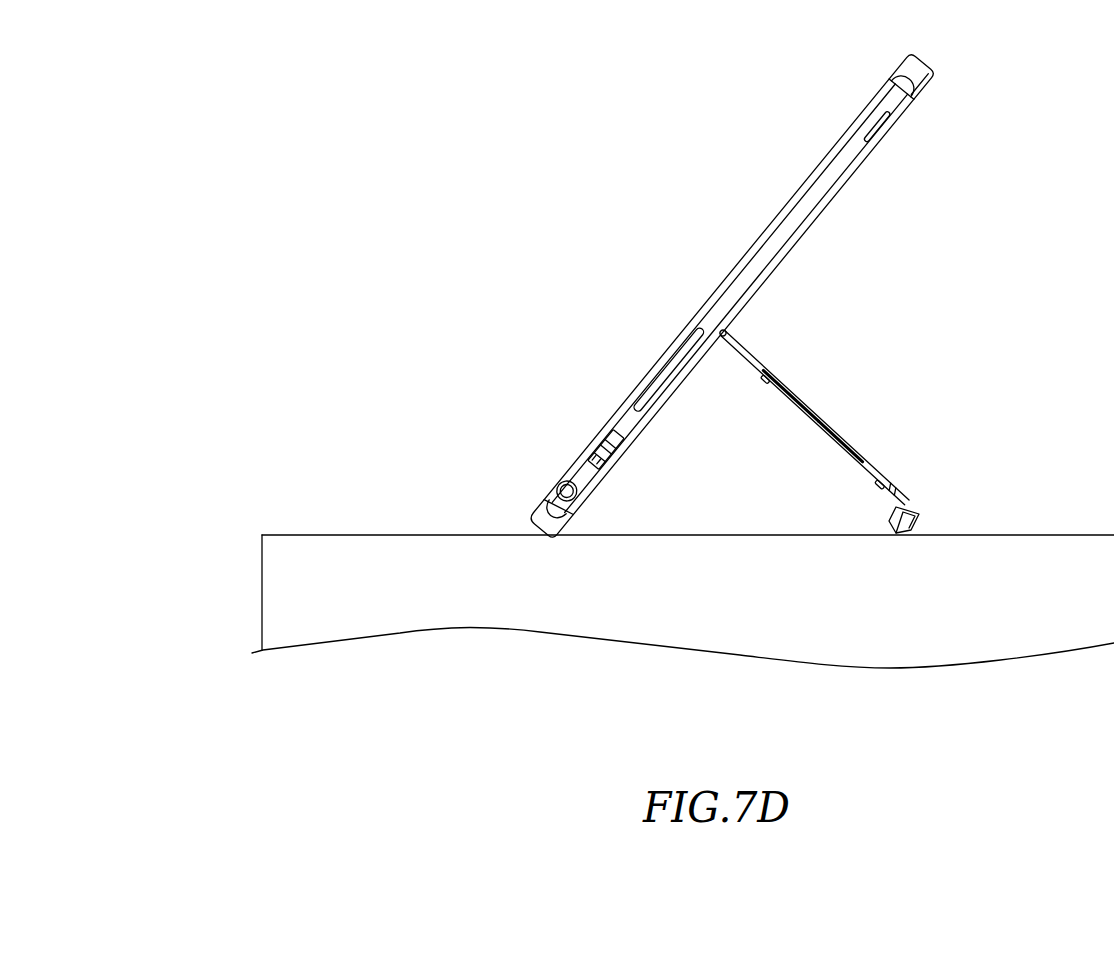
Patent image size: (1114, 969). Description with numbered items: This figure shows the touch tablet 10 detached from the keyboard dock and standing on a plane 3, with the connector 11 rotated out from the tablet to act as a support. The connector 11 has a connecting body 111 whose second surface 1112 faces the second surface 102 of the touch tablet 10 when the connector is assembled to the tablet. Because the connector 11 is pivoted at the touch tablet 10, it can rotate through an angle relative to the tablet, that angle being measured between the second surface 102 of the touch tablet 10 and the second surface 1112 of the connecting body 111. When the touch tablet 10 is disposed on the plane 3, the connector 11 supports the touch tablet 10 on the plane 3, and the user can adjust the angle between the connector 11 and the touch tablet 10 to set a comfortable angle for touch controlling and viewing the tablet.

The plane 3 is at (400, 535).
The touch tablet 10 is at (799, 284).
The second surface 102 is at (668, 370).
The connector 11 is at (840, 431).
The connecting body 111 is at (813, 419).
The second surface 1112 is at (827, 403).